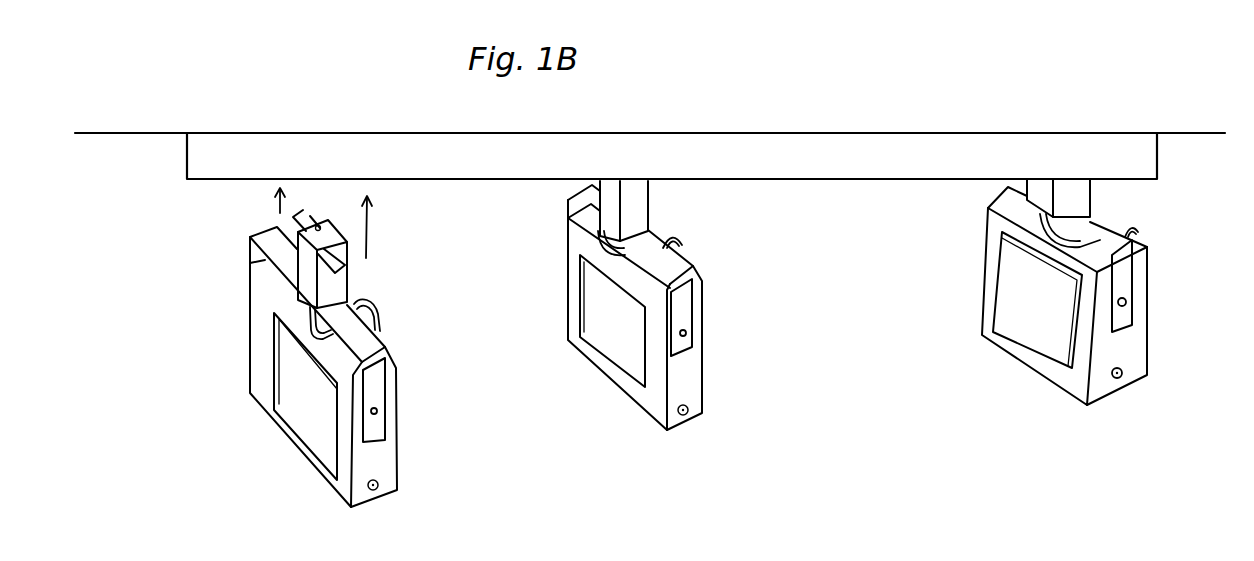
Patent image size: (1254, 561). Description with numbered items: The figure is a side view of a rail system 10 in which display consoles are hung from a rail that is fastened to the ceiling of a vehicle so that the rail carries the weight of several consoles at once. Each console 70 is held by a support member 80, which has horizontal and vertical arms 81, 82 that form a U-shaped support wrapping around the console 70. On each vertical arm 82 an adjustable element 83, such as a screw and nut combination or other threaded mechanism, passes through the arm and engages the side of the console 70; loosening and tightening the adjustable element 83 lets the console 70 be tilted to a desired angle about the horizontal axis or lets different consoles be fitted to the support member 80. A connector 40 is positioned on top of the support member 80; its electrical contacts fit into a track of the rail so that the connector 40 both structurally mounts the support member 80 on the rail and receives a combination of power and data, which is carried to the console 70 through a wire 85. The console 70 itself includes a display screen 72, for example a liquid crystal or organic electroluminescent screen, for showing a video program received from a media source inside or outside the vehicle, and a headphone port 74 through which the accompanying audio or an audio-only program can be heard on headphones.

The rail system 10 is at (1206, 97).
The connector 40 is at (319, 226).
The console 70 is at (690, 423).
The display screen 72 is at (620, 343).
The headphone port 74 is at (1124, 372).
The support member 80 is at (686, 253).
The horizontal arm 81 is at (368, 349).
The vertical arm 82 is at (377, 371).
The adjustable element 83 is at (378, 412).
The wire 85 is at (370, 307).